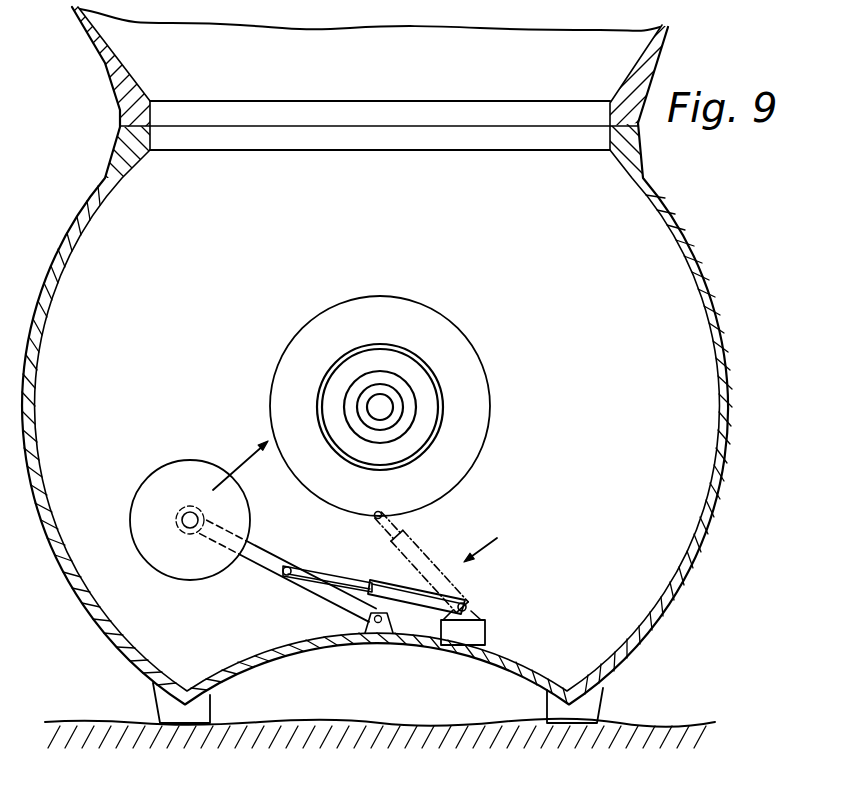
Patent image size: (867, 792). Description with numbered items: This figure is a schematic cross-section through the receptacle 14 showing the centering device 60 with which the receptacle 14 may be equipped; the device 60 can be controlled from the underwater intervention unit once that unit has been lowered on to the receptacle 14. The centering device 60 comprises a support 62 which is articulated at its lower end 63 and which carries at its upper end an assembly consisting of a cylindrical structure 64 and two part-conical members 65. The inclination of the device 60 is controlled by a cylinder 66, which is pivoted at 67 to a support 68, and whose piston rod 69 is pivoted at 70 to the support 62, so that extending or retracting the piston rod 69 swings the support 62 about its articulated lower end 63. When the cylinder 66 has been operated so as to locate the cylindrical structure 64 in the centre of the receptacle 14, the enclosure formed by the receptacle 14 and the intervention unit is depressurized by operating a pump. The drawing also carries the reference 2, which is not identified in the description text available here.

The receptacle 14 is at (710, 283).
The reel 2 is at (433, 383).
The part-conical members 65 is at (167, 463).
The cylindrical structure 64 is at (177, 527).
The support 62 is at (302, 588).
The lower end 63 is at (370, 615).
The piston rod 69 is at (330, 568).
The pivot 70 is at (288, 565).
The cylinder 66 is at (387, 585).
The pivot 67 is at (469, 605).
The support 68 is at (485, 635).
The centering device 60 is at (455, 562).